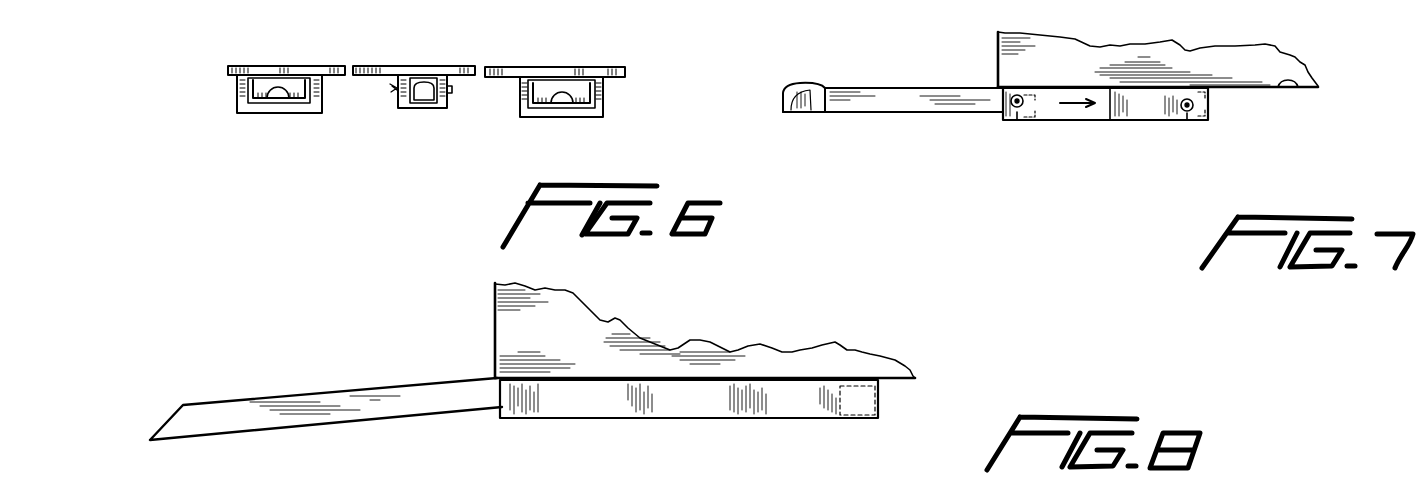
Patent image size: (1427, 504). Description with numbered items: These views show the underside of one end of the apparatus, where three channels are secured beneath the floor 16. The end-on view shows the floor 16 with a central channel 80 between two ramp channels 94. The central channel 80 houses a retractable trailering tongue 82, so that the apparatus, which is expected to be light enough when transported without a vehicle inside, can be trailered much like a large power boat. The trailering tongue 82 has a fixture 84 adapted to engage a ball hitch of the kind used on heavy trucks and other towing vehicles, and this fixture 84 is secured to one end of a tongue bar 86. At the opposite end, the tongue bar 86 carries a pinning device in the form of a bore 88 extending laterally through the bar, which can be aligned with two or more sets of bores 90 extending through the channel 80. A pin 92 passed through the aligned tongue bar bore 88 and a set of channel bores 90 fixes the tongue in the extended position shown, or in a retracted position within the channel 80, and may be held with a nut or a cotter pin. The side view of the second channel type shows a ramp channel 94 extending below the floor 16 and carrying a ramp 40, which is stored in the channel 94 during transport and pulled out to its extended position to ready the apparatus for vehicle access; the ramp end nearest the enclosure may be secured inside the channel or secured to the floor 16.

In FIG. 6, the floor 16 is at (543, 70).
In FIG. 7, the floor 16 is at (1305, 92).
In FIG. 8, the floor 16 is at (705, 330).
In FIG. 6, the ramp 40 is at (293, 100).
In FIG. 8, the ramp 40 is at (210, 415).
In FIG. 6, the central channel 80 is at (412, 108).
In FIG. 7, the central channel 80 is at (1122, 120).
In FIG. 7, the trailering tongue 82 is at (892, 71).
In FIG. 6, the fixture 84 is at (422, 86).
In FIG. 7, the fixture 84 is at (790, 85).
In FIG. 7, the tongue bar 86 is at (893, 100).
In FIG. 7, the bore 88 is at (1022, 108).
In FIG. 7, the channel bores 90 is at (1015, 118).
In FIG. 6, the pin 92 is at (453, 92).
In FIG. 6, the ramp channel 94 is at (237, 92).
In FIG. 8, the ramp channel 94 is at (617, 400).